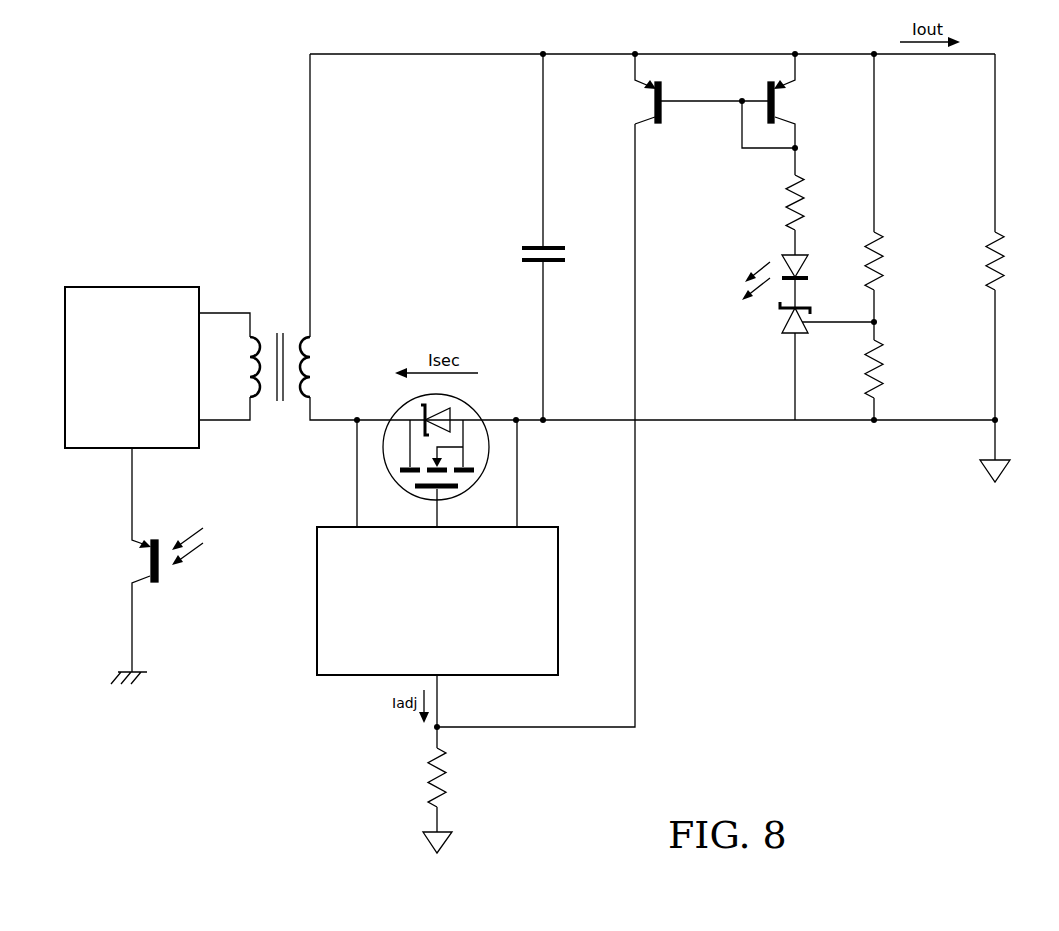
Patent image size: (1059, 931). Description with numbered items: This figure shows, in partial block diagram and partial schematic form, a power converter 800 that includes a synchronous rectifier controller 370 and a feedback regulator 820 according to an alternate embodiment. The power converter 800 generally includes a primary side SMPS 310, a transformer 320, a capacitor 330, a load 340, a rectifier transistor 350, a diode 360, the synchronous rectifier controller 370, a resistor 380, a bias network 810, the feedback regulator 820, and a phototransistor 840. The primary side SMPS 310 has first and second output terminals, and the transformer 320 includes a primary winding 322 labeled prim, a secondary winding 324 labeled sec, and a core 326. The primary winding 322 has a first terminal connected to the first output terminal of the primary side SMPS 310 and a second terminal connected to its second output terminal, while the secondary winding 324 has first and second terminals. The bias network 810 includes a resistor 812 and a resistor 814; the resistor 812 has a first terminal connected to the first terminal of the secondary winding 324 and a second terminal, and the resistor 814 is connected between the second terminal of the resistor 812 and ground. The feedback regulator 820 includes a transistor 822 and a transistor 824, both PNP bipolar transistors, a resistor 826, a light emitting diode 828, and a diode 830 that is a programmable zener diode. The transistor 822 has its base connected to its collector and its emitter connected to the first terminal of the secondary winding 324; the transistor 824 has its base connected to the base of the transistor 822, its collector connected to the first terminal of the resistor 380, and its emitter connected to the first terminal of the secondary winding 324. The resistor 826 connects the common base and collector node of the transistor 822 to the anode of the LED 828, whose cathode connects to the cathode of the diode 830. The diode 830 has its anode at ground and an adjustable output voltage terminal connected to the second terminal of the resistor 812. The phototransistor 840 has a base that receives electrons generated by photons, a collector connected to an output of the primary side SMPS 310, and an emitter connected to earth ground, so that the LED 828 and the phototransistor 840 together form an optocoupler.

The primary side SMPS 310 is at (148, 287).
The transformer 320 is at (283, 354).
The primary winding 322 is at (258, 401).
The secondary winding 324 is at (303, 401).
The core 326 is at (275, 346).
The capacitor 330 is at (551, 263).
The load 340 is at (987, 262).
The rectifier transistor 350 is at (452, 456).
The diode 360 is at (453, 412).
The synchronous rectifier controller 370 is at (559, 558).
The resistor 380 is at (428, 790).
The power converter 800 is at (604, 828).
The bias network 810 is at (880, 272).
The resistor 812 is at (878, 270).
The resistor 814 is at (870, 376).
The feedback regulator 820 is at (734, 218).
The transistor 822 is at (775, 108).
The transistor 824 is at (654, 108).
The resistor 826 is at (788, 205).
The light emitting diode (LED) 828 is at (808, 264).
The diode 830 is at (785, 320).
The phototransistor 840 is at (150, 565).